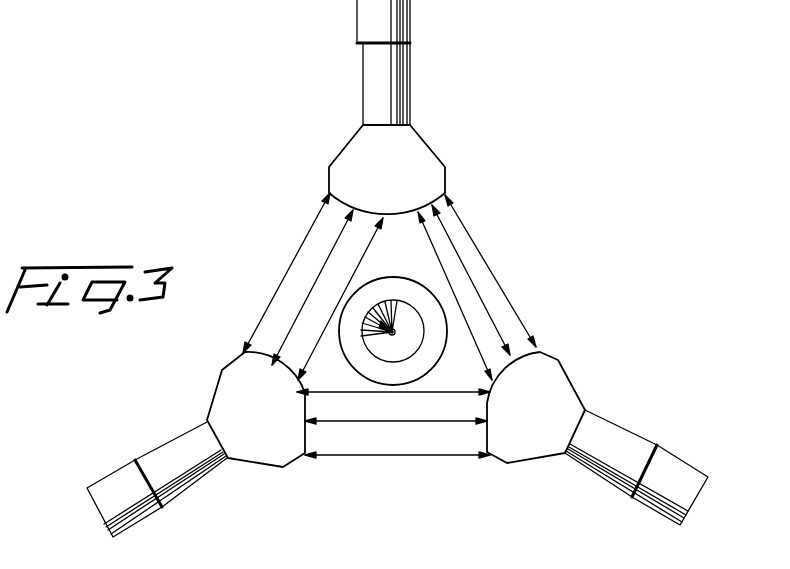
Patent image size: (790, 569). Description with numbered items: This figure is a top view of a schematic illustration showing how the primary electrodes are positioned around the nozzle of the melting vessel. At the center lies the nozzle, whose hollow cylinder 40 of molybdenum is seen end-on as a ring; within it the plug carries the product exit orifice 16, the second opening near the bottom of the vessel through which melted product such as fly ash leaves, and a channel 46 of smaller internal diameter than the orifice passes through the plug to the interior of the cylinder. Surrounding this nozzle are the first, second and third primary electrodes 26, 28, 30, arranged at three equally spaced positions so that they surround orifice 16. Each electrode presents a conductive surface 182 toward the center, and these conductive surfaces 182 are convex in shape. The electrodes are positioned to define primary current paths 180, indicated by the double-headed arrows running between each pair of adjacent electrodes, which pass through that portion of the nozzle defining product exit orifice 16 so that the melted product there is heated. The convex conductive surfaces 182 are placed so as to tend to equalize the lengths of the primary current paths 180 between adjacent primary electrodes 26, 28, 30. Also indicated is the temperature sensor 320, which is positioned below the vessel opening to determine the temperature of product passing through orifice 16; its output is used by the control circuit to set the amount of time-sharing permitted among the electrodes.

The product exit orifice 16 is at (403, 347).
The first primary electrode 26 is at (582, 398).
The second primary electrode 28 is at (415, 133).
The third primary electrode 30 is at (193, 426).
The hollow cylinder 40 is at (437, 317).
The channel 46 is at (392, 332).
The primary current paths 180 is at (490, 268).
The conductive surfaces 182 is at (443, 205).
The temperature sensor 320 is at (112, 0).